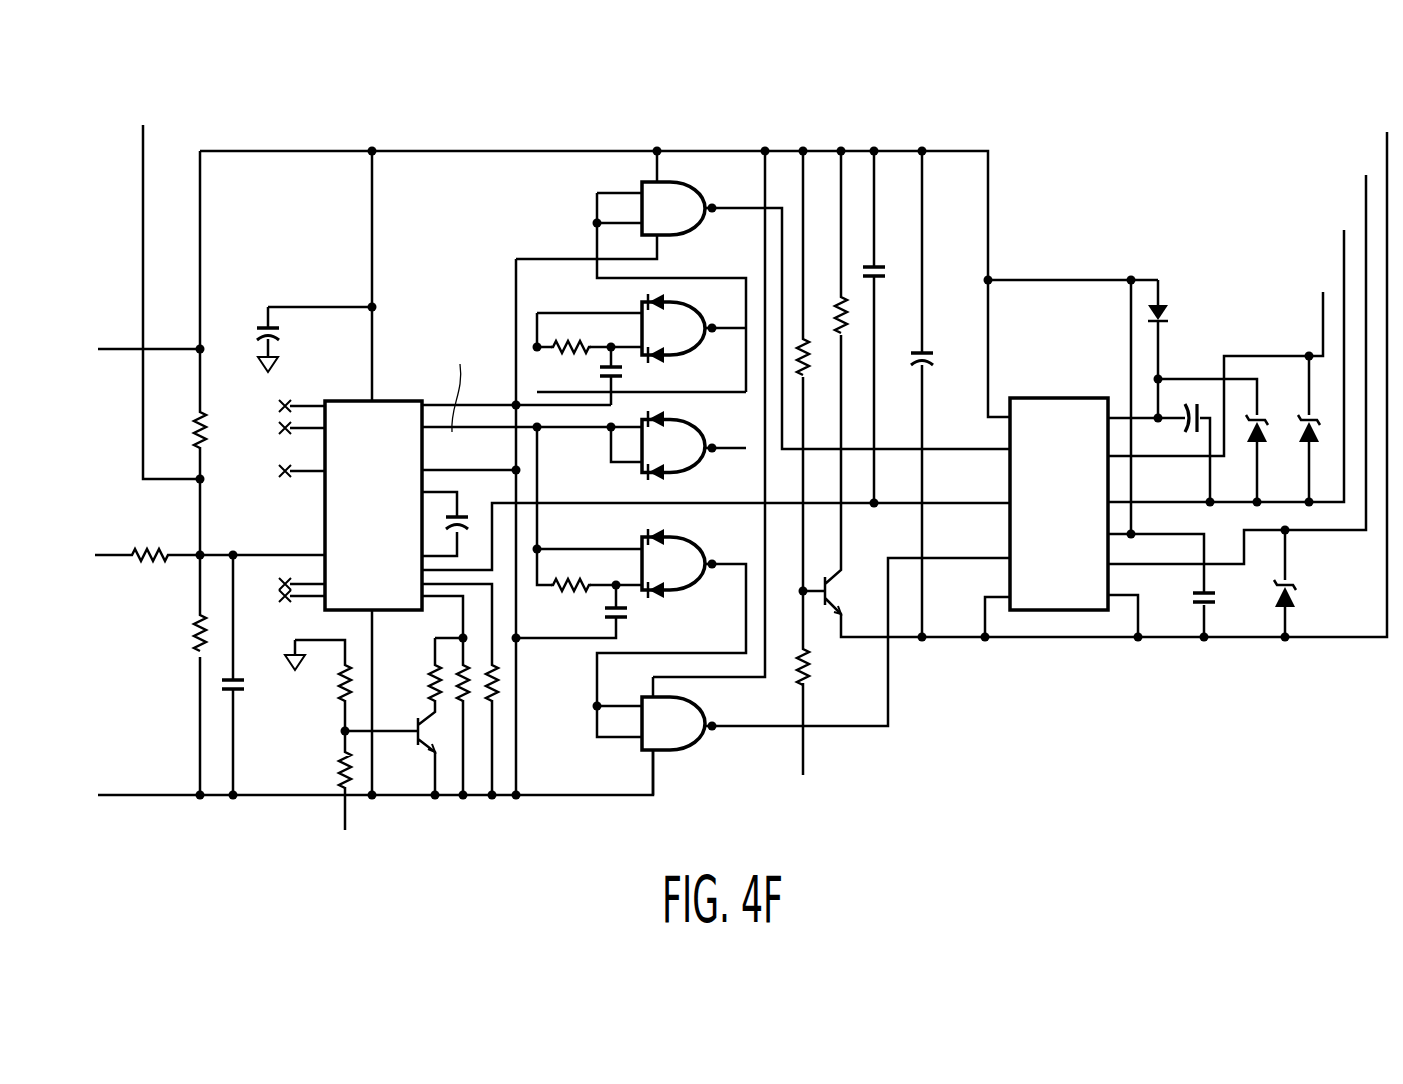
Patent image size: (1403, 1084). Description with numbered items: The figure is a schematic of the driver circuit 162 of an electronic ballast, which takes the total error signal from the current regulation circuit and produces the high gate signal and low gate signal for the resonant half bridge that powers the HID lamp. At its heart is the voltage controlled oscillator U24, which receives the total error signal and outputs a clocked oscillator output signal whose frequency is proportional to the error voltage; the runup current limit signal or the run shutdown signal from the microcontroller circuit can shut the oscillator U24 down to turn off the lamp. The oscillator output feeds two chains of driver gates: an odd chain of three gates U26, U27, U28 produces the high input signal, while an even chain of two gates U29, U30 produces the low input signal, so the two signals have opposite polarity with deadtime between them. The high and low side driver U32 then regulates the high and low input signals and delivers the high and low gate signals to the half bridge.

The driver circuit 162 is at (604, 127).
The voltage controlled oscillator U24 is at (395, 516).
The driver gate U26 is at (692, 223).
The driver gate U27 is at (692, 343).
The driver gate U28 is at (692, 461).
The driver gate U29 is at (692, 578).
The driver gate U30 is at (692, 738).
The high and low side driver U32 is at (1081, 514).